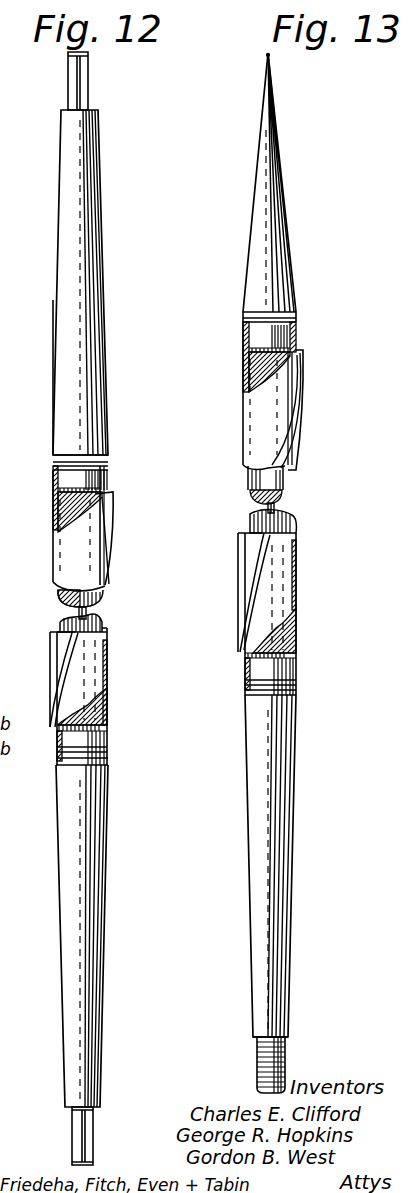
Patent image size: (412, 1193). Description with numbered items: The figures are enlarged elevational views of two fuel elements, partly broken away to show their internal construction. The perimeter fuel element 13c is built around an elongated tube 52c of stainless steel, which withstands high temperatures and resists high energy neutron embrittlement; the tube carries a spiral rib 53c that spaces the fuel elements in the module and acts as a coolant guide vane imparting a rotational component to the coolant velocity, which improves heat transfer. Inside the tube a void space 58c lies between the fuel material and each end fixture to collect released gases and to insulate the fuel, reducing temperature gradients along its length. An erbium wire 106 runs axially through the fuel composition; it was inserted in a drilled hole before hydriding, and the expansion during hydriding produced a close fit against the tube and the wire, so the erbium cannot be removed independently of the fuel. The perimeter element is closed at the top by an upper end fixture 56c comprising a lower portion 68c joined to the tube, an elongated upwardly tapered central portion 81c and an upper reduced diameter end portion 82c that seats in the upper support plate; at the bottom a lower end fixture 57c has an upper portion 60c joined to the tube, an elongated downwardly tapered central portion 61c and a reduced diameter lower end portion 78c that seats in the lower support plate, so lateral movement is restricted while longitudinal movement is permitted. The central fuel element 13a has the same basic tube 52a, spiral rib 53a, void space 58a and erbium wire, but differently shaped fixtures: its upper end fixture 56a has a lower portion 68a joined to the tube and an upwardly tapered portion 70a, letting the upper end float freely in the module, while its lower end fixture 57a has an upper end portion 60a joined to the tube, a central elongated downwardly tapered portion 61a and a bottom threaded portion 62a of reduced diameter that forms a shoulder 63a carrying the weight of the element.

In FIG. 12, the upper reduced diameter end portion 82c is at (87, 85).
In FIG. 12, the upper end fixture 56c is at (96, 276).
In FIG. 12, the elongated upwardly tapered central portion 81c is at (106, 380).
In FIG. 12, the perimeter fuel element 13c is at (53, 400).
In FIG. 12, the lower portion 68c is at (106, 450).
In FIG. 12, the void space 58c is at (108, 478).
In FIG. 12, the spiral rib 53c is at (113, 544).
In FIG. 12, the erbium wire 106 is at (70, 621).
In FIG. 13, the erbium wire 106 is at (266, 515).
In FIG. 12, the tube 52c is at (108, 702).
In FIG. 12, the upper portion 60c is at (108, 745).
In FIG. 12, the lower end fixture 57c is at (98, 866).
In FIG. 12, the elongated downwardly tapered central portion 61c is at (100, 951).
In FIG. 12, the reduced diameter lower end portion 78c is at (74, 1138).
In FIG. 13, the upwardly tapered portion 70a is at (280, 171).
In FIG. 13, the upper end fixture 56a is at (285, 222).
In FIG. 13, the lower portion 68a is at (298, 312).
In FIG. 13, the void space 58a is at (298, 337).
In FIG. 13, the central fuel element 13a is at (243, 379).
In FIG. 13, the spiral rib 53a is at (243, 622).
In FIG. 13, the tube 52a is at (298, 623).
In FIG. 13, the upper end portion 60a is at (298, 678).
In FIG. 13, the lower end fixture 57a is at (294, 874).
In FIG. 13, the central elongated downwardly tapered portion 61a is at (283, 946).
In FIG. 13, the bottom threaded portion 62a is at (289, 1053).
In FIG. 13, the shoulder 63a is at (258, 1043).